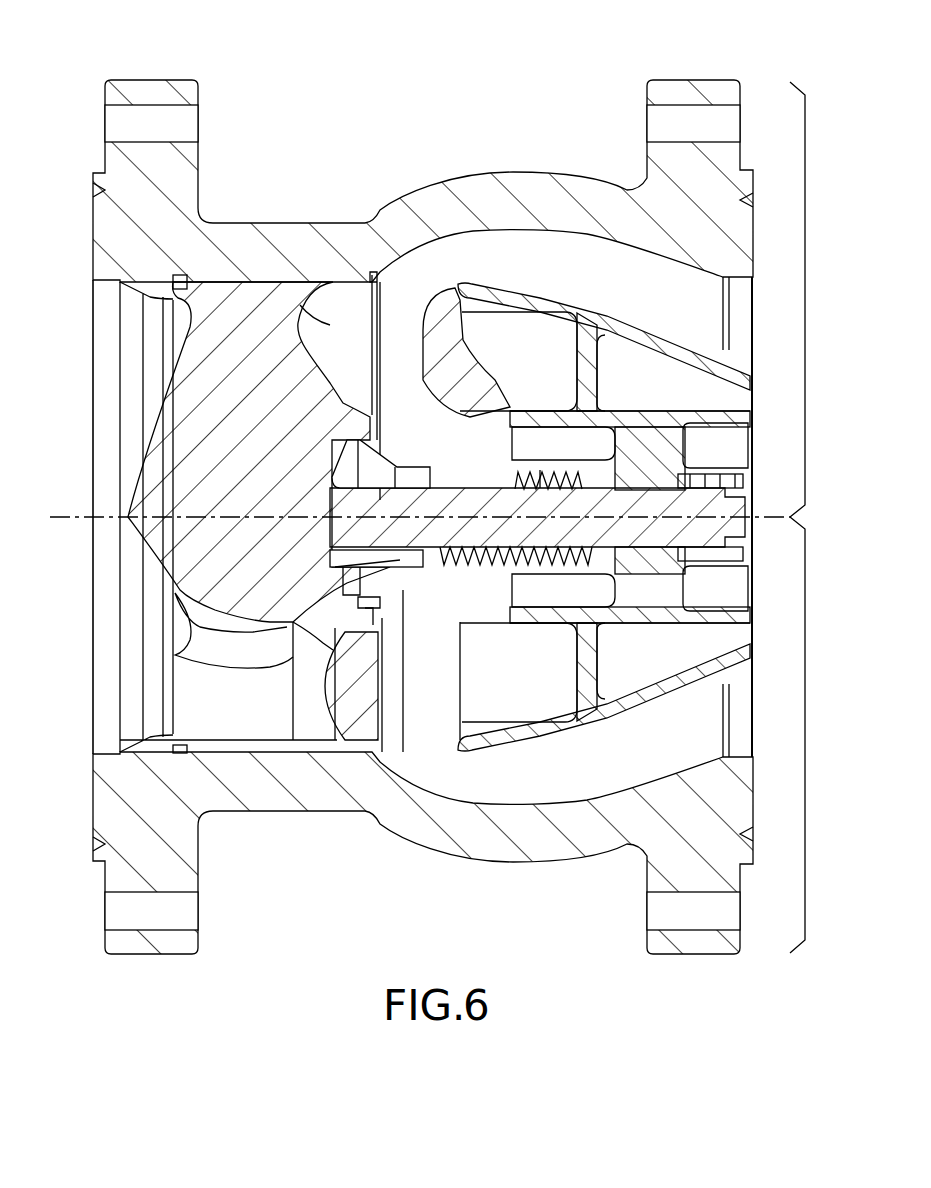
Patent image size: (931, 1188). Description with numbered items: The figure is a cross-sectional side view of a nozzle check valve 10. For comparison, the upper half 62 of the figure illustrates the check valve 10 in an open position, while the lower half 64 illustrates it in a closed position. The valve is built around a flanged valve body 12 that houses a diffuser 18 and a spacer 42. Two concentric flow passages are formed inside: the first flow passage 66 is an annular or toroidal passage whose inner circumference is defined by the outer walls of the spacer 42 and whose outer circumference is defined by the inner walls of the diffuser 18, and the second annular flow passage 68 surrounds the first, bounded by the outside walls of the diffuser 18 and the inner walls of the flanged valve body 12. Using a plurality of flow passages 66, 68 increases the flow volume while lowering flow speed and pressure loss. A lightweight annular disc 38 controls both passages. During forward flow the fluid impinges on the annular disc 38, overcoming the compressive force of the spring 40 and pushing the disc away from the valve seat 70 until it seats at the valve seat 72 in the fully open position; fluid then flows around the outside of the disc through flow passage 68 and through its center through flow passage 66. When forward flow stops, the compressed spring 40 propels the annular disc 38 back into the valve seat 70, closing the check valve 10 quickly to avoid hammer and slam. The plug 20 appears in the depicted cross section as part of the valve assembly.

The check valve 10 is at (480, 86).
The flanged valve body 12 is at (175, 178).
The diffuser 18 is at (675, 432).
The plug 20 is at (183, 478).
The annular disc 38 is at (437, 335).
The spring 40 is at (480, 585).
The spacer 42 is at (391, 590).
The upper half 62 is at (805, 290).
The lower half 64 is at (805, 730).
The first flow passage 66 is at (574, 454).
The second annular flow passage 68 is at (624, 291).
The valve seat 70 is at (313, 328).
The valve seat 72 is at (473, 320).